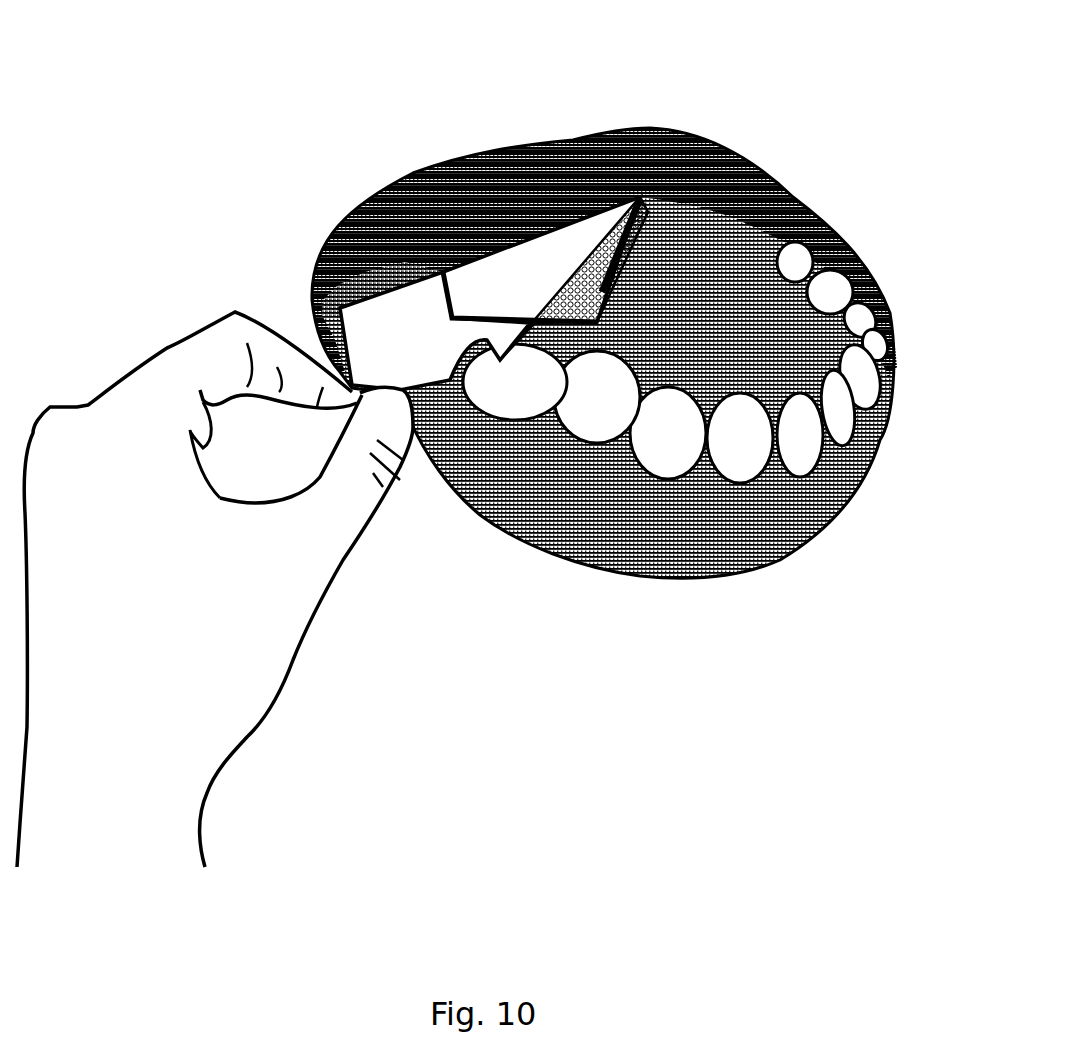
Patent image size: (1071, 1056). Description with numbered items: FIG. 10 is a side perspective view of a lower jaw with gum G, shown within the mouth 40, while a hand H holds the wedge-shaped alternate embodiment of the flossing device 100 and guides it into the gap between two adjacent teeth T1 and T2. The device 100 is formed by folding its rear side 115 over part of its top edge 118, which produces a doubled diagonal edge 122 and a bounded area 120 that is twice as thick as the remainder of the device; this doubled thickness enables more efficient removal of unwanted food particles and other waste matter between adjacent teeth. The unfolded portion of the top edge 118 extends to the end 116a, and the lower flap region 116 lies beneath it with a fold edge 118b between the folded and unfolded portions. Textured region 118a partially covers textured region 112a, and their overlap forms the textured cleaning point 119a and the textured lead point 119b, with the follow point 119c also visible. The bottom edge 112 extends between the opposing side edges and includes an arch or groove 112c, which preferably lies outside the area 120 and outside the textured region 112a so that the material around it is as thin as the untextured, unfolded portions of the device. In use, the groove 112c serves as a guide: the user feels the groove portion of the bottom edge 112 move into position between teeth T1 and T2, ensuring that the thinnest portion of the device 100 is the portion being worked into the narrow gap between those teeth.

The mouth of user 40 is at (874, 88).
The flossing device 100 is at (492, 225).
The rear side 115 is at (541, 259).
The second flap 116 is at (435, 331).
The end 116a is at (350, 382).
The top edge 118 is at (410, 298).
The textured region 118a is at (575, 283).
The fold edge 118b is at (465, 327).
The textured cleaning point 119a is at (613, 318).
The textured lead point 119b is at (590, 325).
The follow point 119c is at (625, 200).
The area 120 is at (523, 270).
The doubled diagonal edge 122 is at (465, 258).
The bottom edge 112 is at (410, 420).
The textured region 112a is at (597, 315).
The groove 112c is at (467, 345).
The tooth T1 is at (597, 397).
The tooth T2 is at (515, 382).
The gum G is at (543, 420).
The hand H is at (215, 589).